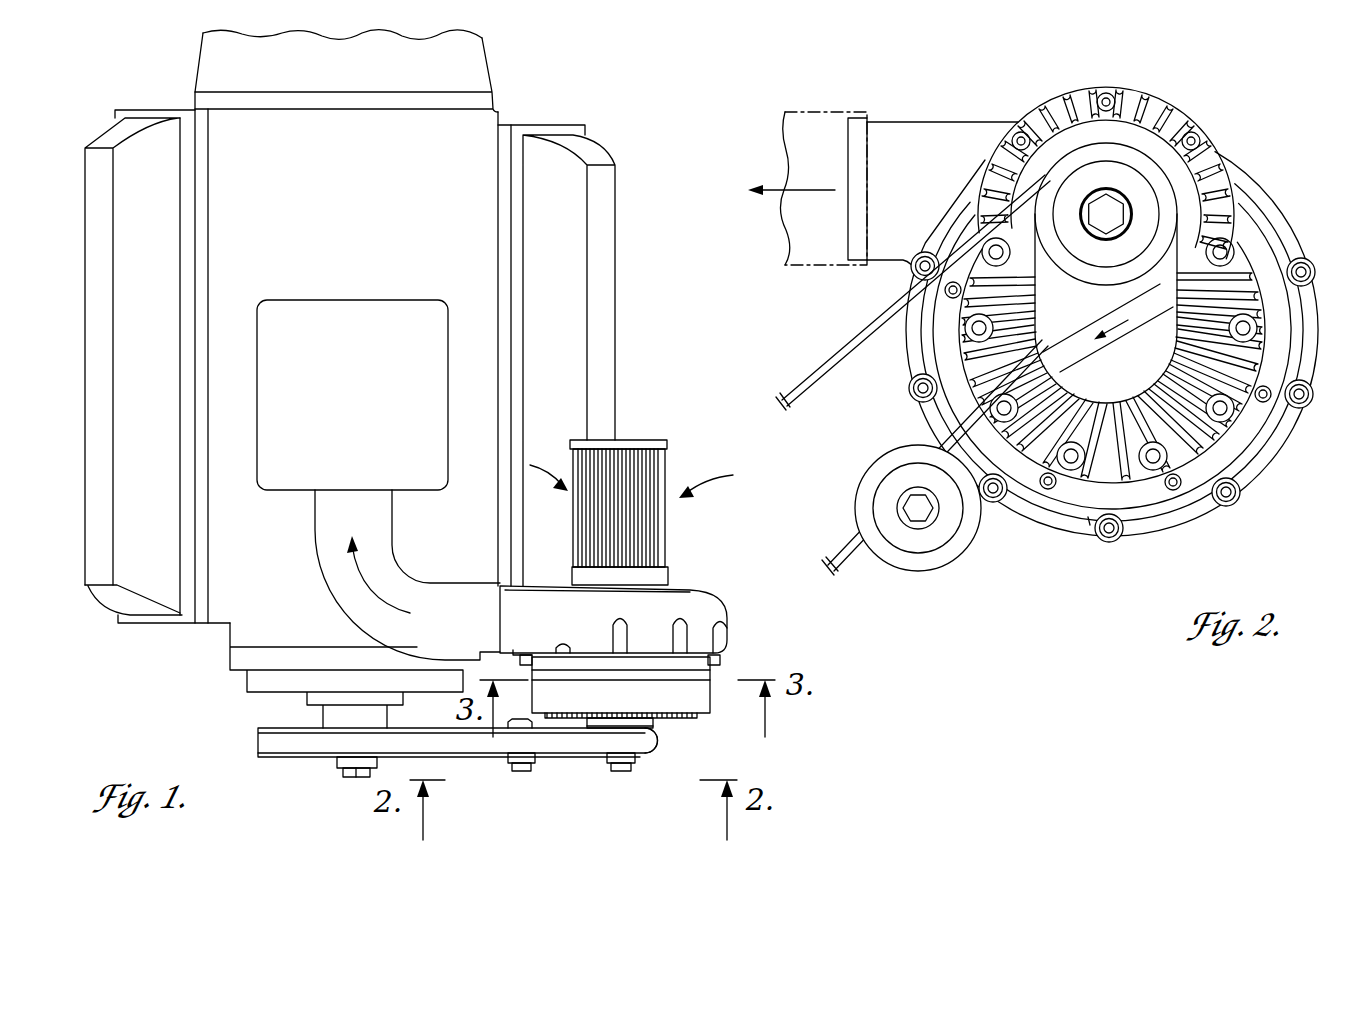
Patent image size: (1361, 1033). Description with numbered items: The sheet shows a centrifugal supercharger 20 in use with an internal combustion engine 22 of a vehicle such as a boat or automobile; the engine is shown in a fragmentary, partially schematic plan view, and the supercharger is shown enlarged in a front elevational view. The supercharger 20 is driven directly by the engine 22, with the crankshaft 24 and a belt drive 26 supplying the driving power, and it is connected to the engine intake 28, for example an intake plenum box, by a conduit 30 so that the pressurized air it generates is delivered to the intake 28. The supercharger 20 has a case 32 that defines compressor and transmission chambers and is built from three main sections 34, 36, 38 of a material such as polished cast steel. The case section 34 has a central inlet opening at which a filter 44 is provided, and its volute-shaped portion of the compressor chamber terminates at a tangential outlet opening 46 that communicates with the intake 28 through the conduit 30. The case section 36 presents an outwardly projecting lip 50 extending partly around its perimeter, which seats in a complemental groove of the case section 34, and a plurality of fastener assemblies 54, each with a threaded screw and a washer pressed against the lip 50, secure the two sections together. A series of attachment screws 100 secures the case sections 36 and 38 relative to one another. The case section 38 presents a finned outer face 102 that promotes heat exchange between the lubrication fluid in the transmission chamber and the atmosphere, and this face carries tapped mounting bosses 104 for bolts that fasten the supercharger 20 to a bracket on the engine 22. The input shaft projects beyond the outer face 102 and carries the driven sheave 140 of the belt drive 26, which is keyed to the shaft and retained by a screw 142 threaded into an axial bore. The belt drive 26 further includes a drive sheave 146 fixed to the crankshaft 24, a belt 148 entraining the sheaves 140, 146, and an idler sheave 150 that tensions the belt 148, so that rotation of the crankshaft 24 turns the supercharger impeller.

In FIG. 1, the supercharger 20 is at (652, 635).
In FIG. 2, the supercharger 20 is at (1104, 317).
In FIG. 1, the internal combustion engine 22 is at (480, 125).
In FIG. 1, the crankshaft 24 is at (338, 770).
In FIG. 1, the belt drive 26 is at (470, 755).
In FIG. 2, the belt drive 26 is at (801, 361).
In FIG. 1, the engine intake 28 is at (330, 300).
In FIG. 1, the conduit 30 is at (388, 557).
In FIG. 2, the conduit 30 is at (805, 110).
In FIG. 1, the case 32 is at (703, 593).
In FIG. 2, the case 32 is at (1290, 235).
In FIG. 1, the case section 34 is at (672, 600).
In FIG. 2, the case section 34 is at (1317, 330).
In FIG. 1, the case section 36 is at (707, 670).
In FIG. 2, the case section 36 is at (1088, 517).
In FIG. 1, the case section 38 is at (708, 700).
In FIG. 2, the case section 38 is at (1148, 497).
In FIG. 1, the filter 44 is at (662, 460).
In FIG. 2, the tangential outlet opening 46 is at (845, 248).
In FIG. 2, the lip 50 is at (1245, 463).
In FIG. 1, the fastener assemblies 54 is at (513, 650).
In FIG. 2, the fastener assemblies 54 is at (910, 400).
In FIG. 2, the attachment screws 100 is at (1195, 140).
In FIG. 2, the finned outer face 102 is at (1108, 400).
In FIG. 2, the mounting bosses 104 is at (963, 330).
In FIG. 1, the driven sheave 140 is at (650, 760).
In FIG. 2, the driven sheave 140 is at (1082, 158).
In FIG. 1, the screw 142 is at (612, 770).
In FIG. 2, the screw 142 is at (1107, 210).
In FIG. 1, the drive sheave 146 is at (272, 760).
In FIG. 1, the belt 148 is at (262, 740).
In FIG. 2, the belt 148 is at (845, 530).
In FIG. 1, the idler sheave 150 is at (545, 757).
In FIG. 2, the idler sheave 150 is at (925, 572).